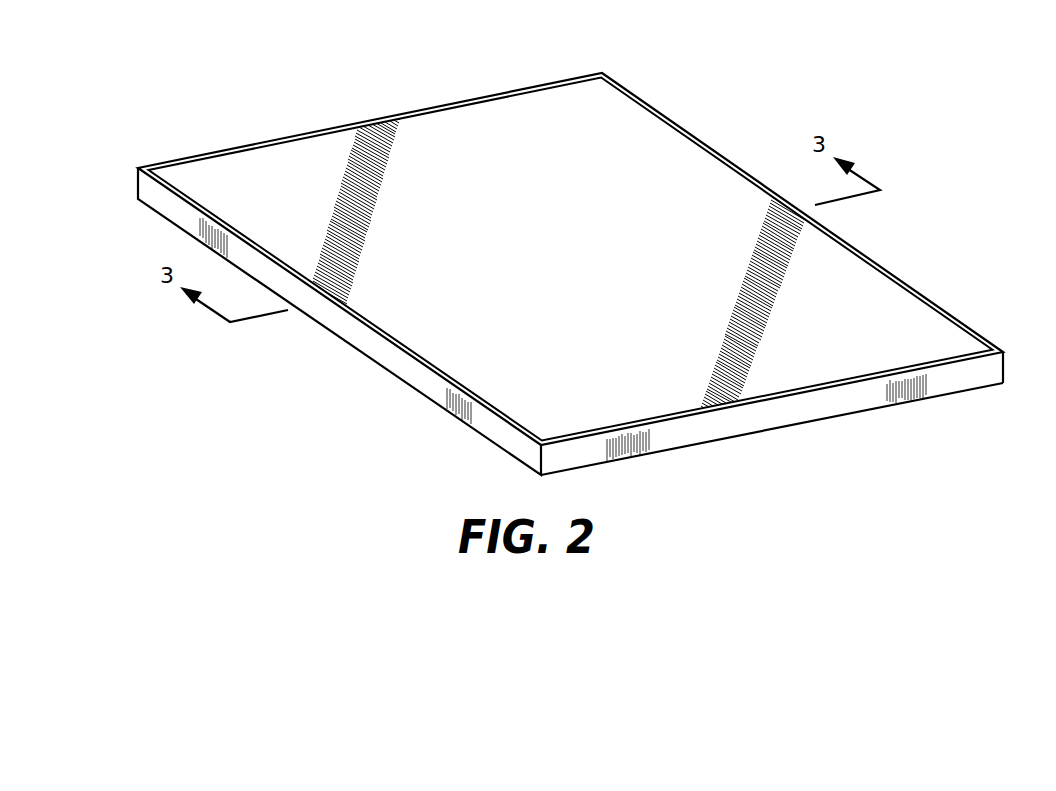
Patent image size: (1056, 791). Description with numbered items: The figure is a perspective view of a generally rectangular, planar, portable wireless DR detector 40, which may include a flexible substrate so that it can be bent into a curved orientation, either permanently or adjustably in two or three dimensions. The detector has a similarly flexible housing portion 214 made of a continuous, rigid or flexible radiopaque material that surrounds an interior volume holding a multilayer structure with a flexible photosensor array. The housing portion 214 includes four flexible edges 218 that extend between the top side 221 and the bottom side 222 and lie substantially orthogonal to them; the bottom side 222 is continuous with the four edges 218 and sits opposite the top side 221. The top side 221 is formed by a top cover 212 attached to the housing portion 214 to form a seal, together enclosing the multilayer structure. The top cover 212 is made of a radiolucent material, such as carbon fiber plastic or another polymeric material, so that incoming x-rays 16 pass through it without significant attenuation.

The DR detector 40 is at (539, 281).
The x-rays 16 is at (585, 281).
The top cover 212 is at (487, 332).
The housing portion 214 is at (717, 427).
The flexible edges 218 is at (338, 128).
The top side 221 is at (932, 342).
The bottom side 222 is at (597, 472).